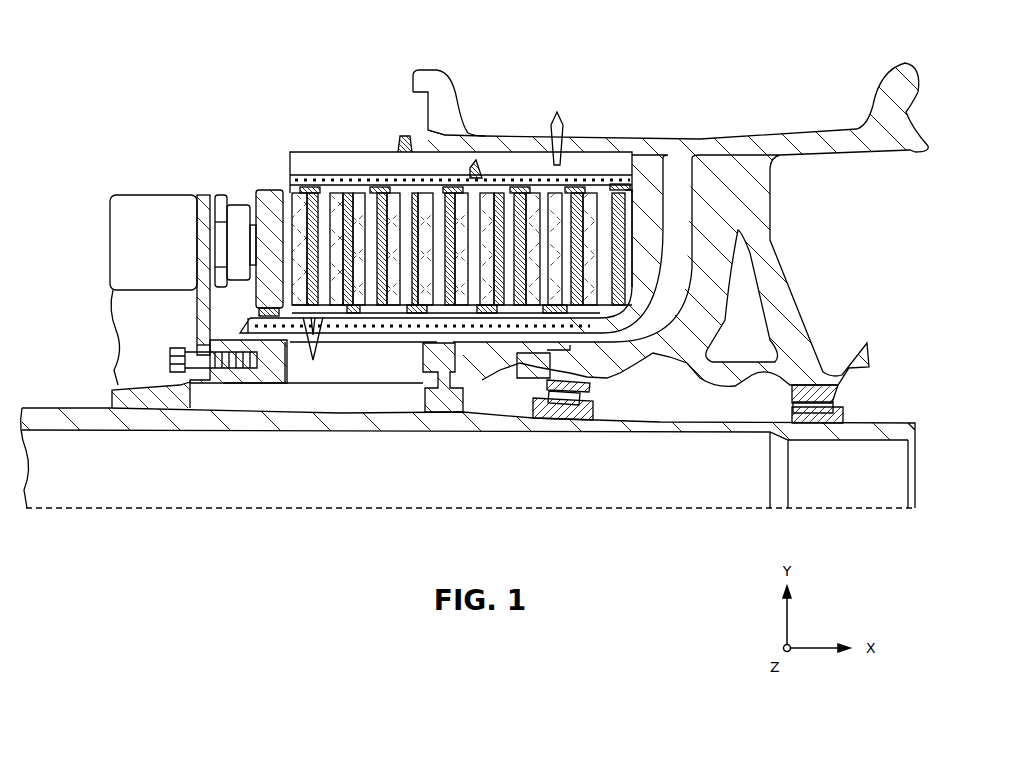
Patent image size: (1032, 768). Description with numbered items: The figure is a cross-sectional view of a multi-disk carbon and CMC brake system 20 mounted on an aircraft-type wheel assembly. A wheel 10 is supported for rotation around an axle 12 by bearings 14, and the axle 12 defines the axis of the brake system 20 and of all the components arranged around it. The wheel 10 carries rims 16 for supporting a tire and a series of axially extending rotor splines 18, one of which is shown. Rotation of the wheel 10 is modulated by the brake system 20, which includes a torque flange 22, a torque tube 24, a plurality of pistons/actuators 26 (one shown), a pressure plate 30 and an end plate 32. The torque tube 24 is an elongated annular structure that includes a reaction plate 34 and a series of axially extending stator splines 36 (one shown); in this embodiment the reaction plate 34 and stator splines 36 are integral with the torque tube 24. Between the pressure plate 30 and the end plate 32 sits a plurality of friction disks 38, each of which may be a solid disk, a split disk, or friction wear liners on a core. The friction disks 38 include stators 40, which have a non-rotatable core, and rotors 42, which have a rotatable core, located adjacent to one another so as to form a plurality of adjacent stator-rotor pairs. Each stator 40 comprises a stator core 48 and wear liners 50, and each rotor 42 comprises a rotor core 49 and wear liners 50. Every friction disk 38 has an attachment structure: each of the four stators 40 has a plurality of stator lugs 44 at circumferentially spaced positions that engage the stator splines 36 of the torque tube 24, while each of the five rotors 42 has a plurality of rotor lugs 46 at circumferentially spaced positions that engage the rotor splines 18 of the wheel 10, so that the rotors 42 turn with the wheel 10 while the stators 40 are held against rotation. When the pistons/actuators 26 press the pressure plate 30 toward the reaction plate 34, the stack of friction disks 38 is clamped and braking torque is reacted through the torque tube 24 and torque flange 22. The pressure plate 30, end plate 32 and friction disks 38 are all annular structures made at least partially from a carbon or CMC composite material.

The wheel 10 is at (776, 122).
The axle 12 is at (698, 426).
The bearings 14 is at (590, 396).
The rims 16 is at (450, 70).
The rotor splines 18 is at (414, 152).
The multi-disk carbon and CMC brake system 20 is at (186, 98).
The torque flange 22 is at (196, 349).
The torque tube 24 is at (350, 322).
The pistons/actuators 26 is at (236, 207).
The pressure plate 30 is at (262, 190).
The end plate 32 is at (622, 158).
The reaction plate 34 is at (665, 287).
The stator splines 36 is at (392, 330).
The friction disks 38 is at (284, 184).
The stator 40 is at (352, 320).
The rotor 42 is at (311, 182).
The stator lugs 44 is at (518, 333).
The rotor lugs 46 is at (478, 170).
The stator core 48 is at (560, 226).
The rotor core 49 is at (596, 246).
The wear liners 50 is at (434, 244).